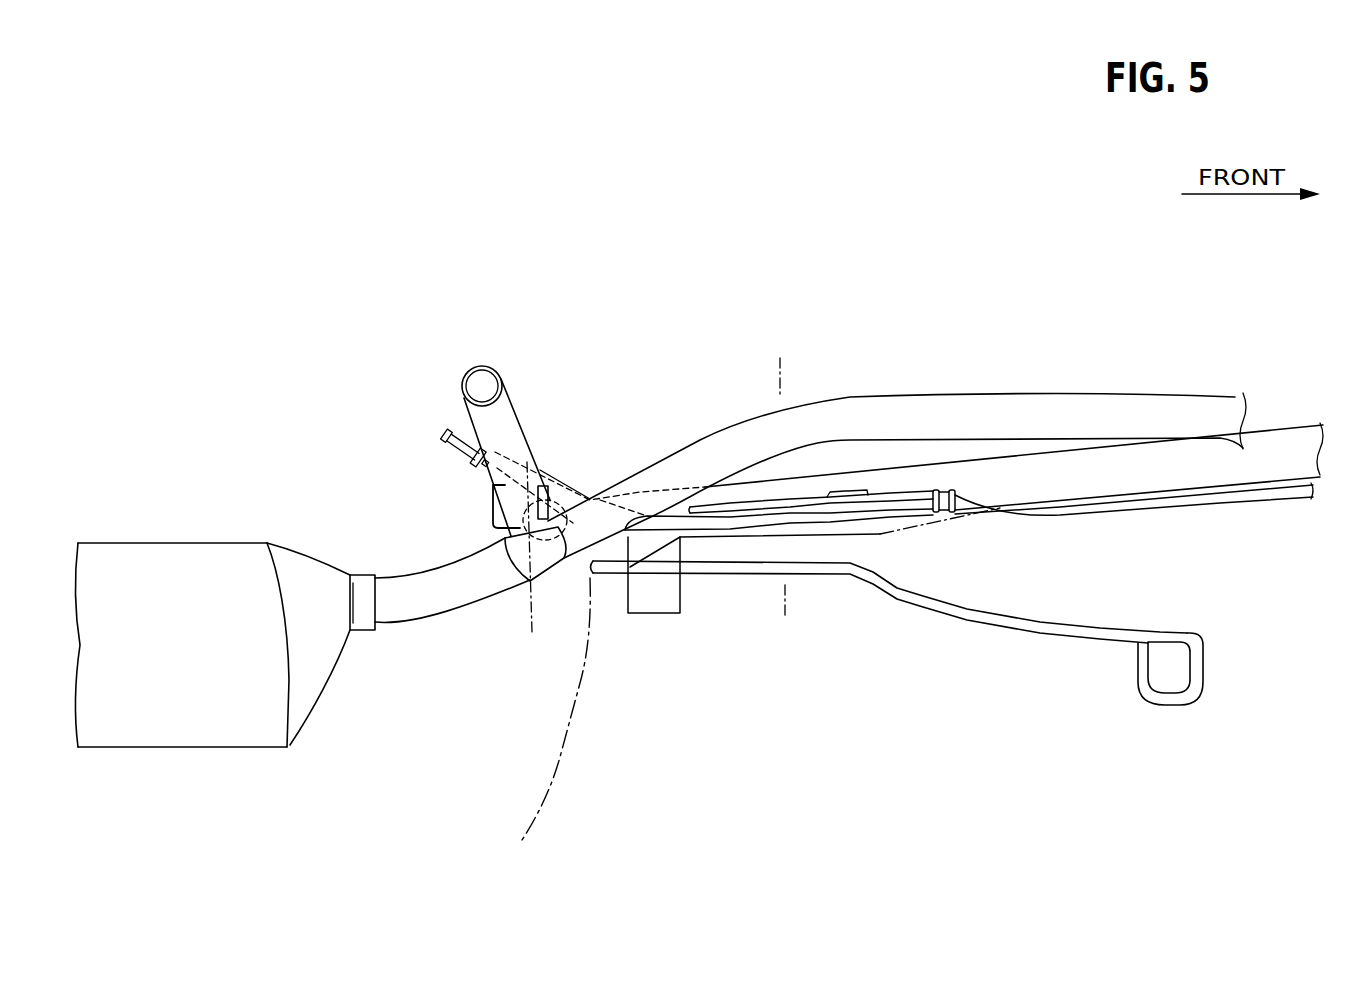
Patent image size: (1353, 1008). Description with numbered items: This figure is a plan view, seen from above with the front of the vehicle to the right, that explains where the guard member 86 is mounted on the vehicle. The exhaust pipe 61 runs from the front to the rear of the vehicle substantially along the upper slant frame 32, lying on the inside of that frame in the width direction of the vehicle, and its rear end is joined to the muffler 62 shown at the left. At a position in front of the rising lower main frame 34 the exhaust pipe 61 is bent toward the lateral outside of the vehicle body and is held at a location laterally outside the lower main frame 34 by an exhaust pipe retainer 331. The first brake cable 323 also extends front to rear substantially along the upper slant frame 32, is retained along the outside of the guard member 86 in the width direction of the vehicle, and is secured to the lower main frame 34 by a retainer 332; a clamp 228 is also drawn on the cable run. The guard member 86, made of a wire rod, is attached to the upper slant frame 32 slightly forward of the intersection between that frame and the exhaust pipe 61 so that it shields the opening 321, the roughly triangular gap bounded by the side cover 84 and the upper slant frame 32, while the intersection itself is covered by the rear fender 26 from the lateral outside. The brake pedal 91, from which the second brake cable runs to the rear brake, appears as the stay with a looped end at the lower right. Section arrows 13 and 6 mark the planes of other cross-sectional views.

The rear fender 26 is at (577, 705).
The upper slant frame 32 is at (1282, 435).
The lower main frame 34 is at (511, 424).
The exhaust pipe 61 is at (1023, 410).
The muffler 62 is at (180, 548).
The side cover 84 is at (930, 527).
The guard member 86 is at (773, 497).
The brake pedal 91 is at (1042, 625).
The clamp 228 is at (943, 488).
The opening 321 is at (826, 528).
The first brake cable 323 is at (893, 497).
The exhaust pipe retainer 331 is at (480, 496).
The retainer 332 is at (465, 428).
The section line 13 is at (527, 458).
The section line 6 is at (814, 358).